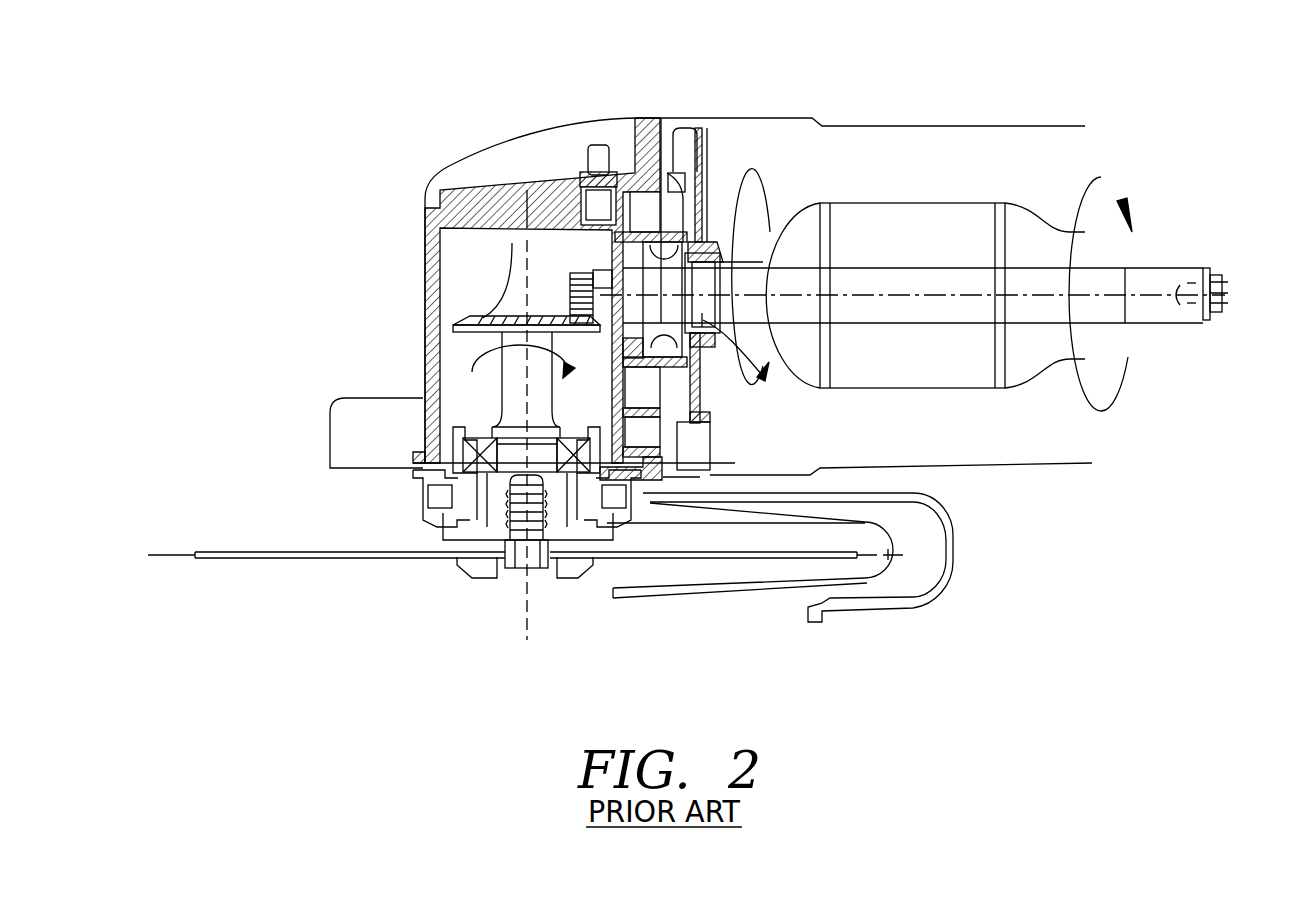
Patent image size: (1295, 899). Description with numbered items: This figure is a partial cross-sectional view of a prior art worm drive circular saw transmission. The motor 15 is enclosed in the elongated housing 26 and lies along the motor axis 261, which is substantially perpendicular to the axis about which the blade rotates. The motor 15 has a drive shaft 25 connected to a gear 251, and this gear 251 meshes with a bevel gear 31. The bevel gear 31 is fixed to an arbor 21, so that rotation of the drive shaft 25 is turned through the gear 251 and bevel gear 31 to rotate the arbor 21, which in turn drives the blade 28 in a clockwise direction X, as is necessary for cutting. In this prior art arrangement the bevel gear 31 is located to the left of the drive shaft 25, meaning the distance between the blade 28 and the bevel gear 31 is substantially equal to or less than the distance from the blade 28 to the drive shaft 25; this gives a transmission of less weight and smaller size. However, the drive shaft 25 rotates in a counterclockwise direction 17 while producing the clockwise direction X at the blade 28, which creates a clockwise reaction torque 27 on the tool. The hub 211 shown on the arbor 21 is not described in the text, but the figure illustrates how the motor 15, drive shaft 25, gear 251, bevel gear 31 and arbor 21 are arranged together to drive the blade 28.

The motor 15 is at (918, 178).
The counterclockwise direction 17 is at (747, 172).
The arbor 21 is at (508, 398).
The shaft hub 211 is at (500, 312).
The drive shaft 25 is at (700, 358).
The gear 251 is at (582, 280).
The housing 26 is at (840, 124).
The motor axis 261 is at (1157, 290).
The clockwise reaction torque 27 is at (1121, 200).
The blade 28 is at (257, 550).
The bevel gear 31 is at (495, 325).
The clockwise direction X is at (472, 372).